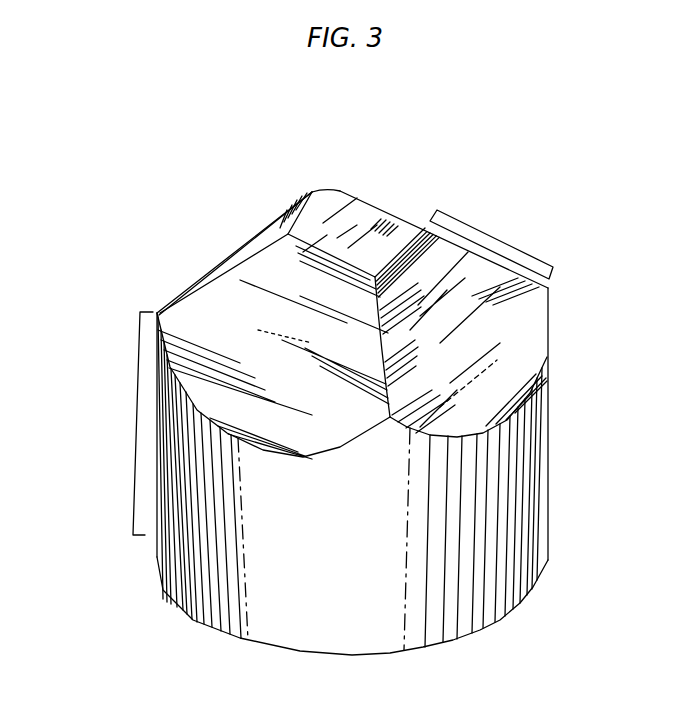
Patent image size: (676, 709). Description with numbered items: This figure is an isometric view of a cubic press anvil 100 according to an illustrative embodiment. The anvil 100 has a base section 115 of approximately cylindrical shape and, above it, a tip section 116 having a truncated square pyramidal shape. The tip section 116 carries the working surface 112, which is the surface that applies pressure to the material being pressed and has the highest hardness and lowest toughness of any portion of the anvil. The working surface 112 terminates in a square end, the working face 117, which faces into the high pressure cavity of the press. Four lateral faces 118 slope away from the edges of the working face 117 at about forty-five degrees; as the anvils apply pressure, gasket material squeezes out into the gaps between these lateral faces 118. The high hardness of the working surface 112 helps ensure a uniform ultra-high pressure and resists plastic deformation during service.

The cubic press anvil 100 is at (299, 148).
The working surface 112 is at (359, 186).
The base section 115 is at (134, 423).
The tip section 116 is at (501, 232).
The working face 117 is at (327, 220).
The lateral faces 118 is at (265, 234).